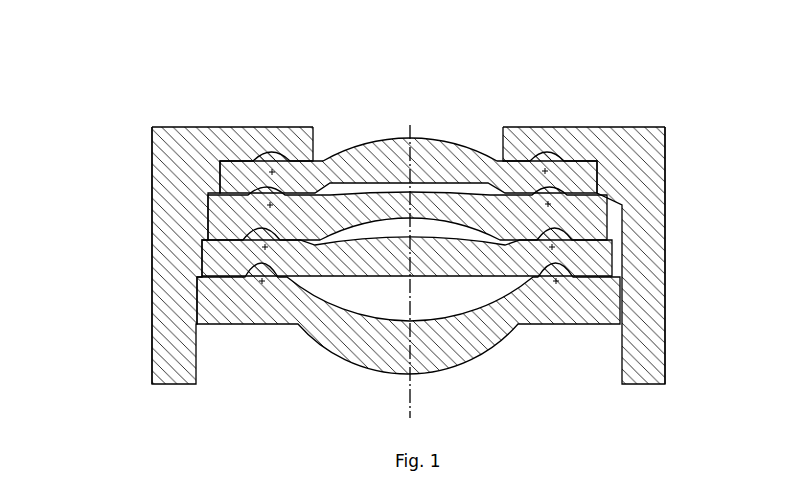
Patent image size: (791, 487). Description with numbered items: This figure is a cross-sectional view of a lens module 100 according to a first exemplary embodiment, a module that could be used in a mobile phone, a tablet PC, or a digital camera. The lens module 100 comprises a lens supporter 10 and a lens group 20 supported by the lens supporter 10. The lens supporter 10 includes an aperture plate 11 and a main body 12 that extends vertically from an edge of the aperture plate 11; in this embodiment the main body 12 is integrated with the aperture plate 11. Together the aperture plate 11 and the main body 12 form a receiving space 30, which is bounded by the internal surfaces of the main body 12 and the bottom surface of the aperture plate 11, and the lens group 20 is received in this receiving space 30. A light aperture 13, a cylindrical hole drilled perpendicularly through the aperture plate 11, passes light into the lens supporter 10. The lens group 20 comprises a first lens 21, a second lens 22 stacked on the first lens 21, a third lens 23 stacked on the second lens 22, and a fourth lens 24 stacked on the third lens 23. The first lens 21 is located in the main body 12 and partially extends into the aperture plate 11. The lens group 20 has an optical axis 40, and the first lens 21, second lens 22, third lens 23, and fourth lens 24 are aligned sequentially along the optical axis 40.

The lens module 100 is at (407, 230).
The lens supporter 10 is at (468, 243).
The aperture plate 11 is at (643, 127).
The main body 12 is at (665, 166).
The light aperture 13 is at (356, 113).
The lens group 20 is at (325, 256).
The first lens 21 is at (230, 177).
The second lens 22 is at (217, 215).
The third lens 23 is at (217, 258).
The fourth lens 24 is at (223, 303).
The receiving space 30 is at (575, 381).
The optical axis 40 is at (410, 390).